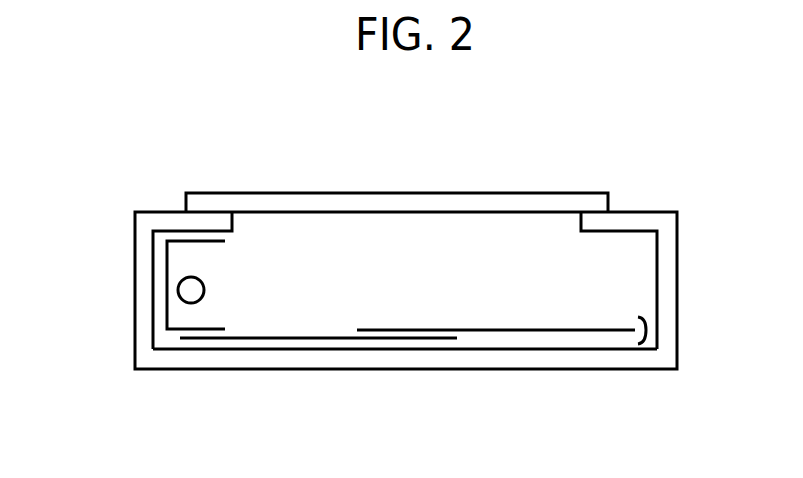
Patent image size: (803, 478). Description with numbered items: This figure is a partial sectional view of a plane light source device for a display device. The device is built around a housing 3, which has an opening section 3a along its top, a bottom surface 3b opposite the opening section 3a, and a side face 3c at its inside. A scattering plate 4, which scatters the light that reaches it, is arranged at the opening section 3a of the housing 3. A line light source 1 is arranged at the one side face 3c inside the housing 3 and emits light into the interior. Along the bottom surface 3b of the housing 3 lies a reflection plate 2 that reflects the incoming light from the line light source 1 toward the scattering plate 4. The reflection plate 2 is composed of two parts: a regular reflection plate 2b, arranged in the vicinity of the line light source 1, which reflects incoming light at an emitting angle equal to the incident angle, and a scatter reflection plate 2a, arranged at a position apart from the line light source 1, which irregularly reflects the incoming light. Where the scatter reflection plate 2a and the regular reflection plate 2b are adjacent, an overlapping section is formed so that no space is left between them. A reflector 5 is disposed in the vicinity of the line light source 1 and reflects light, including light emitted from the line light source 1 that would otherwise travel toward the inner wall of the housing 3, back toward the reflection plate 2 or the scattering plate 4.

The line light source 1 is at (192, 289).
The reflection plate 2 is at (647, 330).
The scatter reflection plate 2a is at (607, 331).
The regular reflection plate 2b is at (282, 338).
The housing 3 is at (633, 223).
The opening section 3a is at (509, 227).
The bottom surface 3b is at (541, 349).
The side face 3c is at (152, 244).
The scattering plate 4 is at (397, 203).
The reflector 5 is at (165, 272).